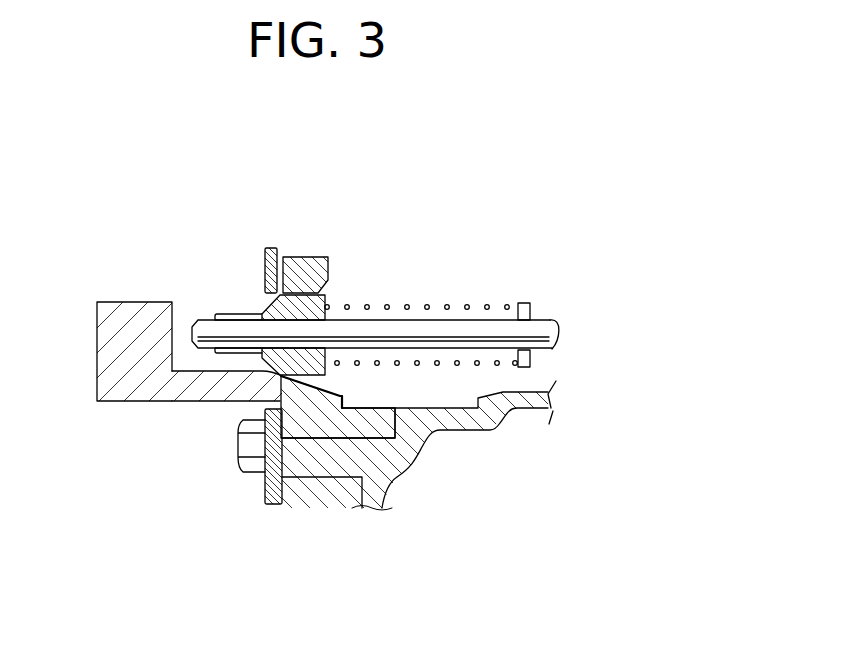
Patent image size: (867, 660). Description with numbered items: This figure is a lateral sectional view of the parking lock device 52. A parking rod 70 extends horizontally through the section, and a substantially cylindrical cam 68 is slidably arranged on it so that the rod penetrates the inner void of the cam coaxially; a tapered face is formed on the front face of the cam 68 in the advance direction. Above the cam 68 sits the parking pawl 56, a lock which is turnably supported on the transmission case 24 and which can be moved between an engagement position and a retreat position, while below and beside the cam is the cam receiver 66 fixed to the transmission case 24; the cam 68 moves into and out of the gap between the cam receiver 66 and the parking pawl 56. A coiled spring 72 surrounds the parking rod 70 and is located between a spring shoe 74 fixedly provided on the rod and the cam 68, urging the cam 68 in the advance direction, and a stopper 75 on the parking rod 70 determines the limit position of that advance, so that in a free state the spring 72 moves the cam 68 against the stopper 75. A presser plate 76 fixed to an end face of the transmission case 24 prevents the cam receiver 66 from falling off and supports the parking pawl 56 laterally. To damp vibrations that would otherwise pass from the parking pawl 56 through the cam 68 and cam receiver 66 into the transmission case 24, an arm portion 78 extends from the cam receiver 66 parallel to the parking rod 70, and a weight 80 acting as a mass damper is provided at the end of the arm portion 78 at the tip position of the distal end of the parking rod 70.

The transmission case 24 is at (307, 468).
The parking lock device 52 is at (445, 188).
The parking pawl 56 is at (330, 258).
The cam receiver 66 is at (345, 428).
The cam 68 is at (330, 295).
The parking rod 70 is at (472, 330).
The spring 72 is at (448, 304).
The spring shoe 74 is at (531, 304).
The stopper 75 is at (232, 313).
The presser plate 76 is at (265, 252).
The arm portion 78 is at (178, 401).
The weight 80 is at (122, 308).